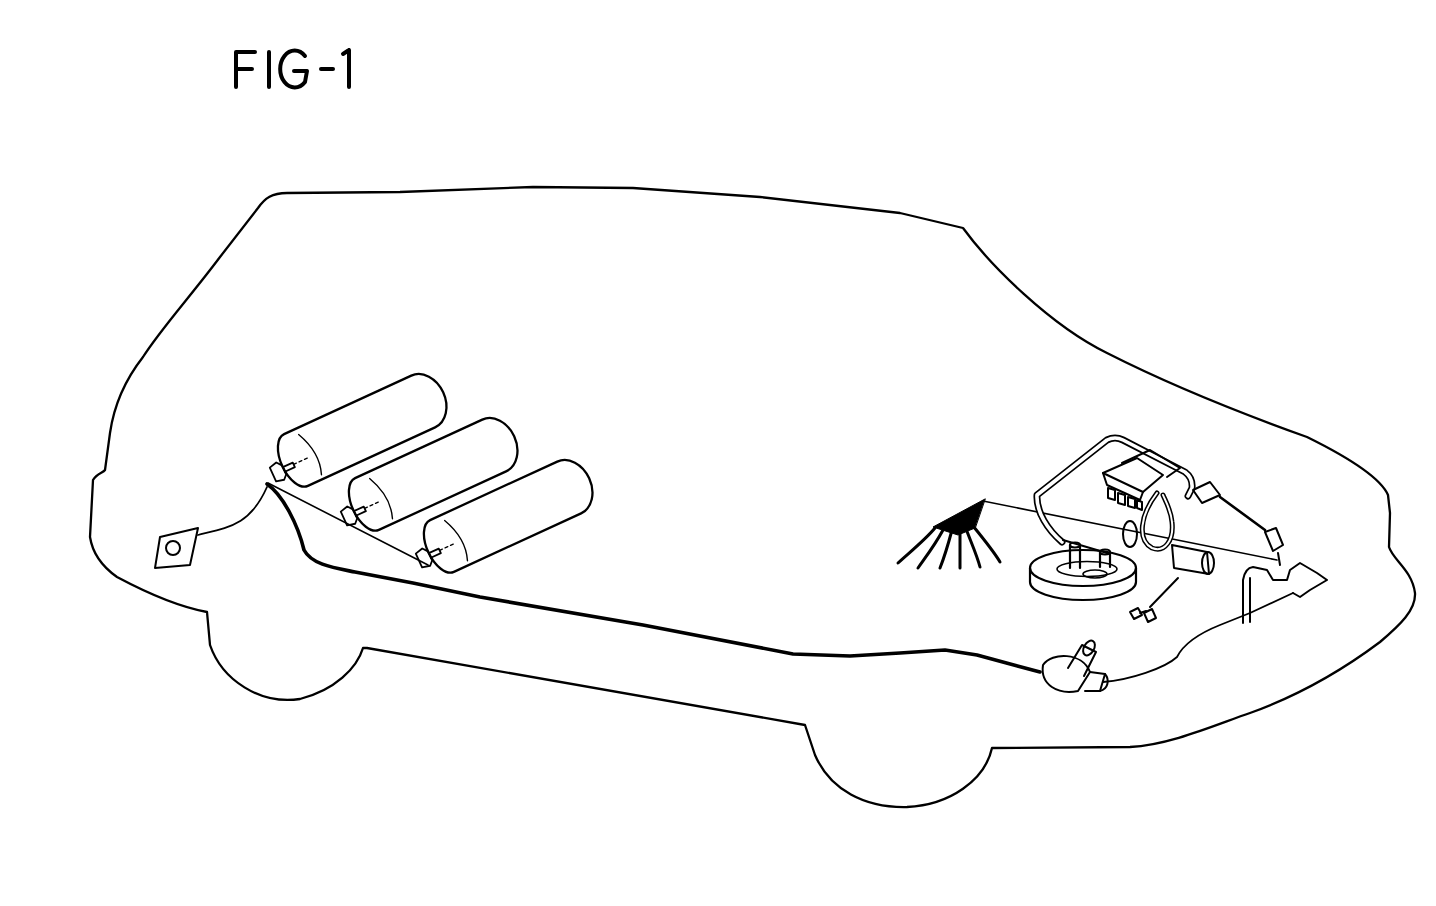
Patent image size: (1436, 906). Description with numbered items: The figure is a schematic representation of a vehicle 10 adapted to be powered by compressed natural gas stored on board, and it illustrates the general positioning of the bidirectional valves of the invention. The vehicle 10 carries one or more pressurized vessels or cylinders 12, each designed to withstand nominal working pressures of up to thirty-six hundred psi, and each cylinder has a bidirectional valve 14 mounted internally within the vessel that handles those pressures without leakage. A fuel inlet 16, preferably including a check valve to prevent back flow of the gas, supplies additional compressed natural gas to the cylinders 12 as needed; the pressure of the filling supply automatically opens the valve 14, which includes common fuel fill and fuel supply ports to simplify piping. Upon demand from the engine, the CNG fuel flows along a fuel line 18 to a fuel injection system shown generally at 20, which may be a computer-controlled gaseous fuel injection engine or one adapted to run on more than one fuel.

The vehicle 10 is at (698, 169).
The pressurized vessels or cylinders 12 is at (438, 388).
The bidirectional valve 14 is at (272, 470).
The fuel inlet 16 is at (192, 556).
The fuel line 18 is at (643, 625).
The fuel injection system 20 is at (1018, 463).